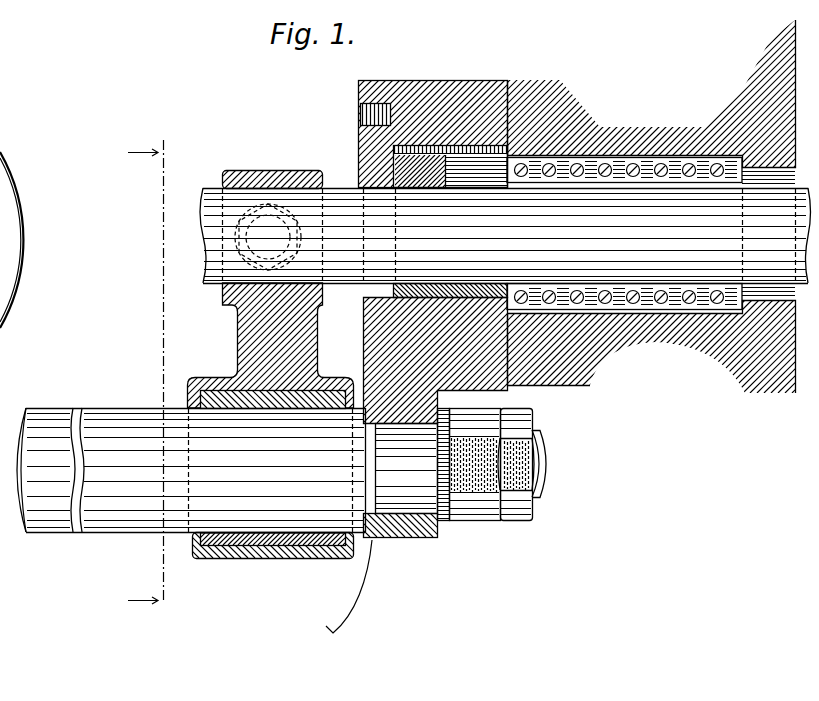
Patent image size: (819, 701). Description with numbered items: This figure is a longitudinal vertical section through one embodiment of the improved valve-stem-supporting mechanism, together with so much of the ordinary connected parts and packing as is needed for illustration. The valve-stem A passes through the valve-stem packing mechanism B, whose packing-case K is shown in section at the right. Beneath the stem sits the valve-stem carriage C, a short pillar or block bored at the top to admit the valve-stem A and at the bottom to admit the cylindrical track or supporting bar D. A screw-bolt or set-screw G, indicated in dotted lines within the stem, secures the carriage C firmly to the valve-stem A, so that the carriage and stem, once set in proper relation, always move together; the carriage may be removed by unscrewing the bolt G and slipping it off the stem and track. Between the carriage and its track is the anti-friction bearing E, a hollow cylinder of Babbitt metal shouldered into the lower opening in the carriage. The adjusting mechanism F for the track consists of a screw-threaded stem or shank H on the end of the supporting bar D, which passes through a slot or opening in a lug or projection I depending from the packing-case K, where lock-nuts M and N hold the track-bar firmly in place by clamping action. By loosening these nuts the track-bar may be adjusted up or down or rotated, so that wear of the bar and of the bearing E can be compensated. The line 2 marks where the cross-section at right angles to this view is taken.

The valve-stem A is at (505, 236).
The valve-stem packing mechanism B is at (419, 188).
The valve-stem carriage C is at (268, 289).
The track or supporting bar D is at (191, 470).
The anti-friction bearing E is at (283, 552).
The adjusting mechanism F is at (447, 521).
The screw-bolt or set-screw G is at (268, 237).
The screw-threaded stem or shank H is at (471, 469).
The lug or projection I is at (400, 537).
The packing-case K is at (363, 338).
The lock-nut M is at (487, 521).
The lock-nut N is at (519, 521).
The section line 2 is at (151, 374).